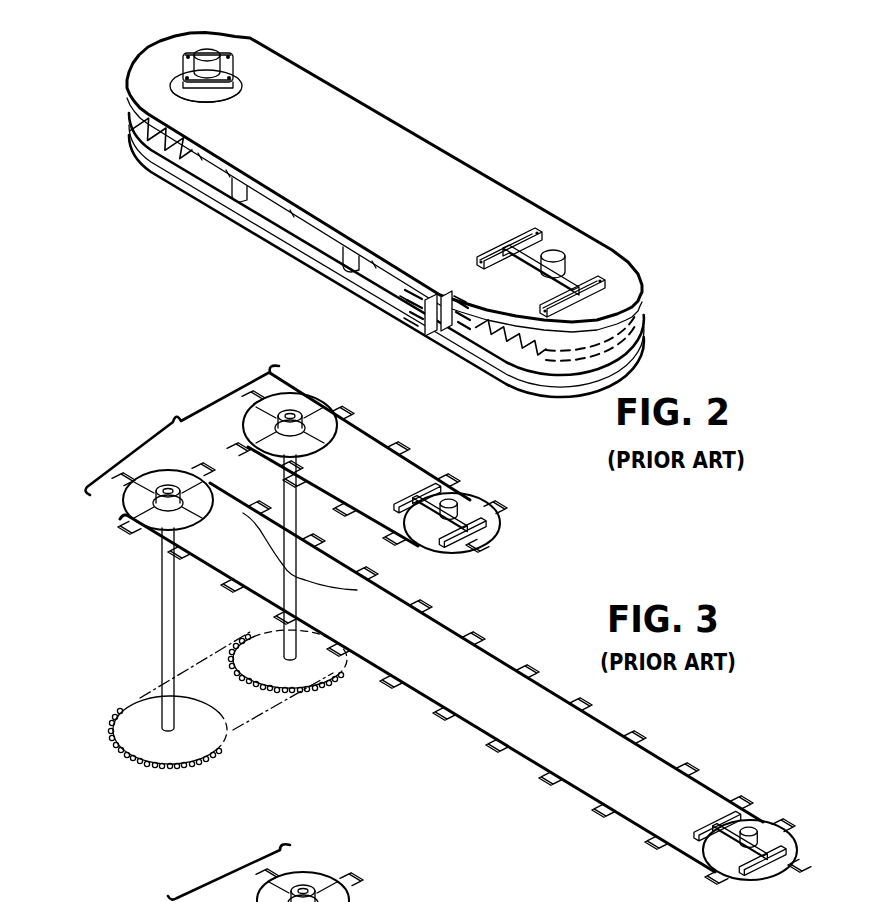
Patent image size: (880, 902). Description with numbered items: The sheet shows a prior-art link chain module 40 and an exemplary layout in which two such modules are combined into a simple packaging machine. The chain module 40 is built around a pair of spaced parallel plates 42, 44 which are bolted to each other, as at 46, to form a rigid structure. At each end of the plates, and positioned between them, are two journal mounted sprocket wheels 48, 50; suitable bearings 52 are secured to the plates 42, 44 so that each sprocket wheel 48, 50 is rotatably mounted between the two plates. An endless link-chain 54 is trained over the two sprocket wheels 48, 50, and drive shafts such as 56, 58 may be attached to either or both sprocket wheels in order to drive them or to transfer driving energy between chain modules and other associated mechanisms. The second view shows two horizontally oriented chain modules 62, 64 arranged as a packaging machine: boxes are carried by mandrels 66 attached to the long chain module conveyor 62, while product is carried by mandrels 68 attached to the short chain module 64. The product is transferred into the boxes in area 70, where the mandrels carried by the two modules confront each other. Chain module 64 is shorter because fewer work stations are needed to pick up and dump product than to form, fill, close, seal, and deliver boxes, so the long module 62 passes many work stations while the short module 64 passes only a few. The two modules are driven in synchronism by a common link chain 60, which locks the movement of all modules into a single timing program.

In FIG. 2, the link chain module 40 is at (483, 150).
In FIG. 2, the plate 42 is at (275, 200).
In FIG. 2, the plate 44 is at (302, 253).
In FIG. 2, the bolt 46 is at (358, 268).
In FIG. 2, the sprocket wheel 48 is at (152, 162).
In FIG. 2, the sprocket wheel 50 is at (497, 374).
In FIG. 2, the bearing 52 is at (232, 52).
In FIG. 2, the endless link-chain 54 is at (412, 318).
In FIG. 2, the drive shaft 56 is at (208, 50).
In FIG. 3, the drive shaft 56 is at (187, 562).
In FIG. 2, the drive shaft 58 is at (560, 250).
In FIG. 3, the chain 60 is at (260, 720).
In FIG. 3, the chain module 62 is at (493, 652).
In FIG. 3, the chain module 64 is at (423, 455).
In FIG. 3, the mandrel 66 is at (634, 728).
In FIG. 3, the mandrel 68 is at (510, 499).
In FIG. 3, the transfer area 70 is at (322, 519).